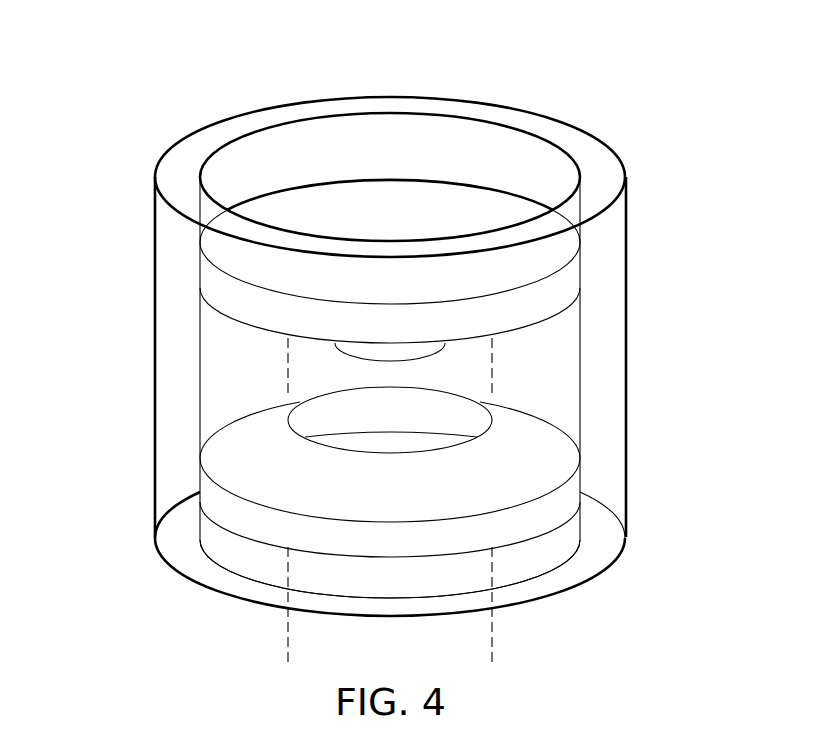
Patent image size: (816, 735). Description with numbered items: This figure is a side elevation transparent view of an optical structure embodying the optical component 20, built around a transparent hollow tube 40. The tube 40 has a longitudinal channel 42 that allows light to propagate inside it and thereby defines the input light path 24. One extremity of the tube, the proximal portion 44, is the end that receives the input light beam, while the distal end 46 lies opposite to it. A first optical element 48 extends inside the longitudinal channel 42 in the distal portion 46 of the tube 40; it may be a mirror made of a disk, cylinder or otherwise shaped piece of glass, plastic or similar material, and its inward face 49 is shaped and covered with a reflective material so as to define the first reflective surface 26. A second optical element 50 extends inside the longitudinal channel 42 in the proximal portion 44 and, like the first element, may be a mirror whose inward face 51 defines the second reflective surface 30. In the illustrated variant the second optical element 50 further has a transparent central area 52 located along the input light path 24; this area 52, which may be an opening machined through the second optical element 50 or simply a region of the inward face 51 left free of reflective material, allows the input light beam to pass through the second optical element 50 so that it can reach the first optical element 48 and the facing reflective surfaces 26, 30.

The optical component 20 is at (697, 160).
The input light path 24 is at (493, 635).
The first reflective surface 26 is at (253, 327).
The second reflective surface 30 is at (212, 459).
The transparent hollow tube 40 is at (626, 357).
The longitudinal channel 42 is at (424, 75).
The proximal portion 44 is at (155, 537).
The distal end 46 is at (155, 212).
The first optical element 48 is at (573, 273).
The inward face 49 is at (222, 313).
The second optical element 50 is at (573, 486).
The inward face 51 is at (553, 448).
The transparent central area 52 is at (333, 417).